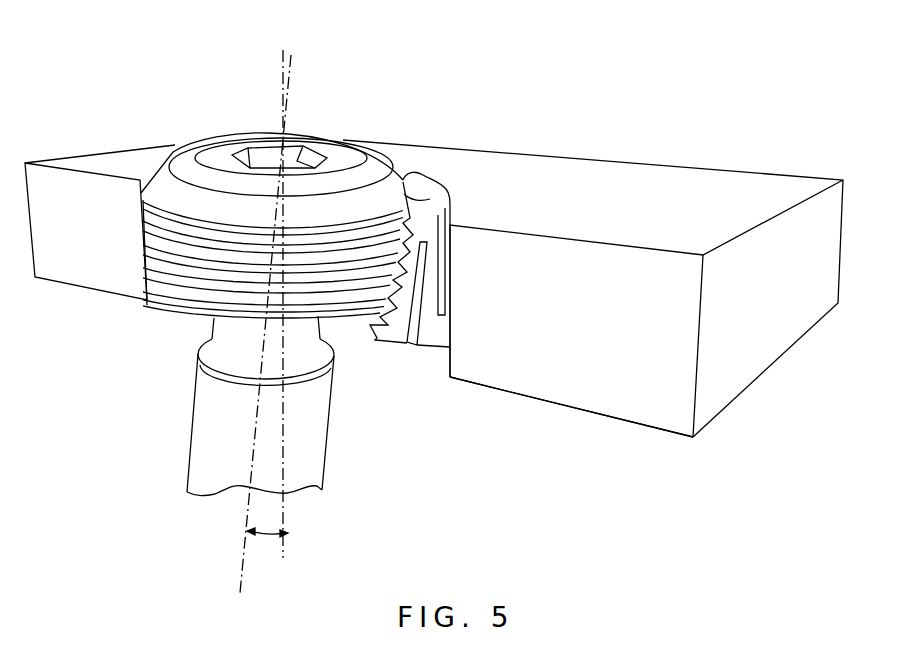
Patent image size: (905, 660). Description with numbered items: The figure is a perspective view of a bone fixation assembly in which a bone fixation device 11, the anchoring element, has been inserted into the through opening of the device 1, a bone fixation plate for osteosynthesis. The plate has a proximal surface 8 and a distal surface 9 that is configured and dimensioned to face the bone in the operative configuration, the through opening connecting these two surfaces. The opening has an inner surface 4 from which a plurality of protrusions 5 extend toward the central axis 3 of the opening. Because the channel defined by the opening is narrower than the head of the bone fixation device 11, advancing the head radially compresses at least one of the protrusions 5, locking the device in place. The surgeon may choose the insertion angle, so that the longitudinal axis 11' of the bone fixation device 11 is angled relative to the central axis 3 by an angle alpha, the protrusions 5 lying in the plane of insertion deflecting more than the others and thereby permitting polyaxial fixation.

The device 1 is at (577, 140).
The central axis 3 is at (280, 62).
The inner surface 4 is at (153, 290).
The protrusions 5 is at (392, 332).
The proximal surface 8 is at (679, 181).
The distal surface 9 is at (643, 427).
The bone fixation device 11 is at (307, 196).
The longitudinal axis 11' is at (241, 324).